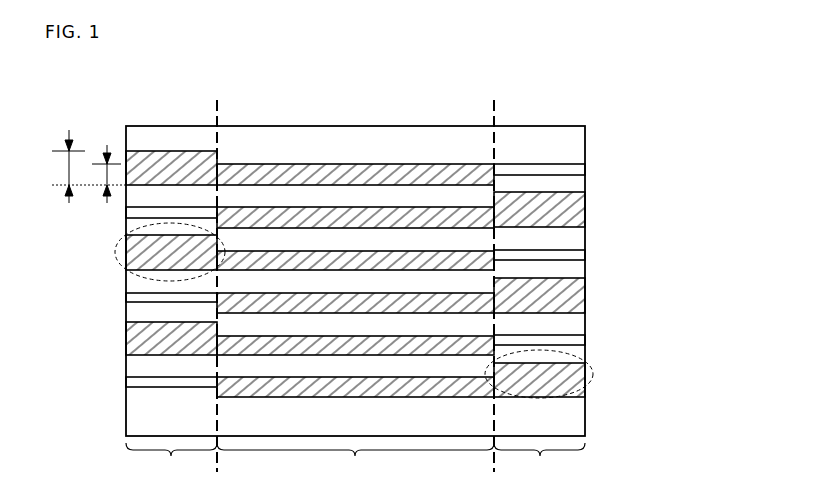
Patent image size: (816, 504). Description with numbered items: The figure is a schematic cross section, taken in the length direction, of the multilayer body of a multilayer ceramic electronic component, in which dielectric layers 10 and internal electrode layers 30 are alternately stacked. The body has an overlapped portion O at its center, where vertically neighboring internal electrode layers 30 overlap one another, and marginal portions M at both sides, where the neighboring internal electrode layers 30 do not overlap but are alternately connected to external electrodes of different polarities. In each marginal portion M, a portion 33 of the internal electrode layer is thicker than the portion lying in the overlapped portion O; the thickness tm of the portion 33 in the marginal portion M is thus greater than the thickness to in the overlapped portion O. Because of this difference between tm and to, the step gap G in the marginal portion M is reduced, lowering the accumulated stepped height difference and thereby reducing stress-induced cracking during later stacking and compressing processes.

The dielectric layer 10 is at (408, 196).
The internal electrode layer 30 is at (472, 258).
The portion of the internal electrode layer positioned in the marginal portion 33 is at (594, 372).
The step gap G is at (140, 290).
The thickness of the internal electrode portion in the marginal portion tm is at (88, 153).
The thickness of the internal electrode portion in the overlapped portion to is at (106, 161).
The marginal portion M is at (355, 465).
The overlapped portion O is at (355, 465).